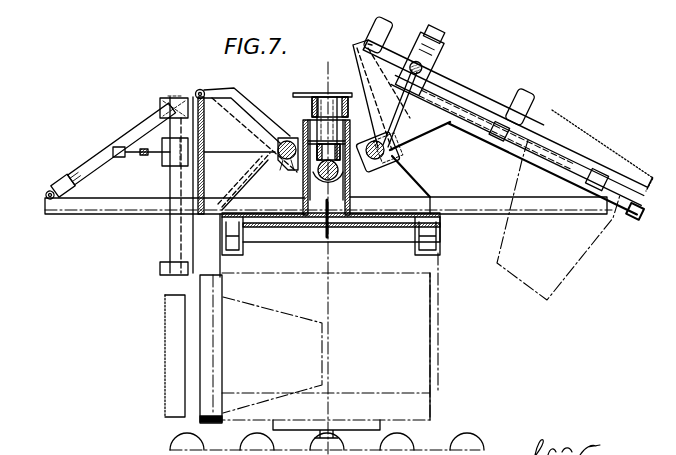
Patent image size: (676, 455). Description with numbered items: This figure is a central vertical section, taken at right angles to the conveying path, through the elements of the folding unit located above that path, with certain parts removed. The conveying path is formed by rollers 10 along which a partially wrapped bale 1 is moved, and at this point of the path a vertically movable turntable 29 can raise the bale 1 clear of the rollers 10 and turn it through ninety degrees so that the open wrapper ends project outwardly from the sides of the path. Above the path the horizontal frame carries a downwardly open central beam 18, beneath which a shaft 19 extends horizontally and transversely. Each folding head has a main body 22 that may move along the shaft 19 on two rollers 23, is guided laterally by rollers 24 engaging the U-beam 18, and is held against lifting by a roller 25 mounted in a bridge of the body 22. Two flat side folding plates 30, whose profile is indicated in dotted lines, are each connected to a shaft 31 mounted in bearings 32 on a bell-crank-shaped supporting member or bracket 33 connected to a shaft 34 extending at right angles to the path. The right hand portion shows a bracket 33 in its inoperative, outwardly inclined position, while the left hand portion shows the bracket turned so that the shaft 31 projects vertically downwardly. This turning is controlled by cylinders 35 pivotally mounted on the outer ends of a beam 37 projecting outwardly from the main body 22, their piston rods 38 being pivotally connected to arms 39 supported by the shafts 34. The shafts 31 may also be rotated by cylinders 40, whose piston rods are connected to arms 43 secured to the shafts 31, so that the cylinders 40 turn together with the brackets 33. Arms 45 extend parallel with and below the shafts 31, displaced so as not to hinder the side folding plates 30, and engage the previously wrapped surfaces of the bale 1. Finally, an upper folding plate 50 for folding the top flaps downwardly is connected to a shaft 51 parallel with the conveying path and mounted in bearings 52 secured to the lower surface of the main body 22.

The bale 1 is at (351, 277).
The conveying path rollers 10 is at (412, 445).
The central beam 18 is at (310, 104).
The shaft 19 is at (339, 172).
The main body 22 is at (416, 180).
The rollers 23 is at (310, 168).
The rollers 24 is at (316, 98).
The roller 25 is at (334, 100).
The turntable 29 is at (304, 431).
The side folding plates 30 is at (165, 327).
The shaft 31 is at (172, 234).
The bearings 32 is at (164, 99).
The supporting member (bracket) 33 is at (262, 171).
The shaft 34 is at (285, 140).
The cylinders 35 is at (125, 138).
The beam 37 is at (107, 216).
The piston rods 38 is at (192, 97).
The arms 39 is at (244, 98).
The cylinders 40 is at (396, 107).
The arms 43 is at (150, 156).
The arms 45 is at (200, 421).
The upper folding plate 50 is at (300, 230).
The shaft 51 is at (243, 250).
The bearings 52 is at (439, 248).